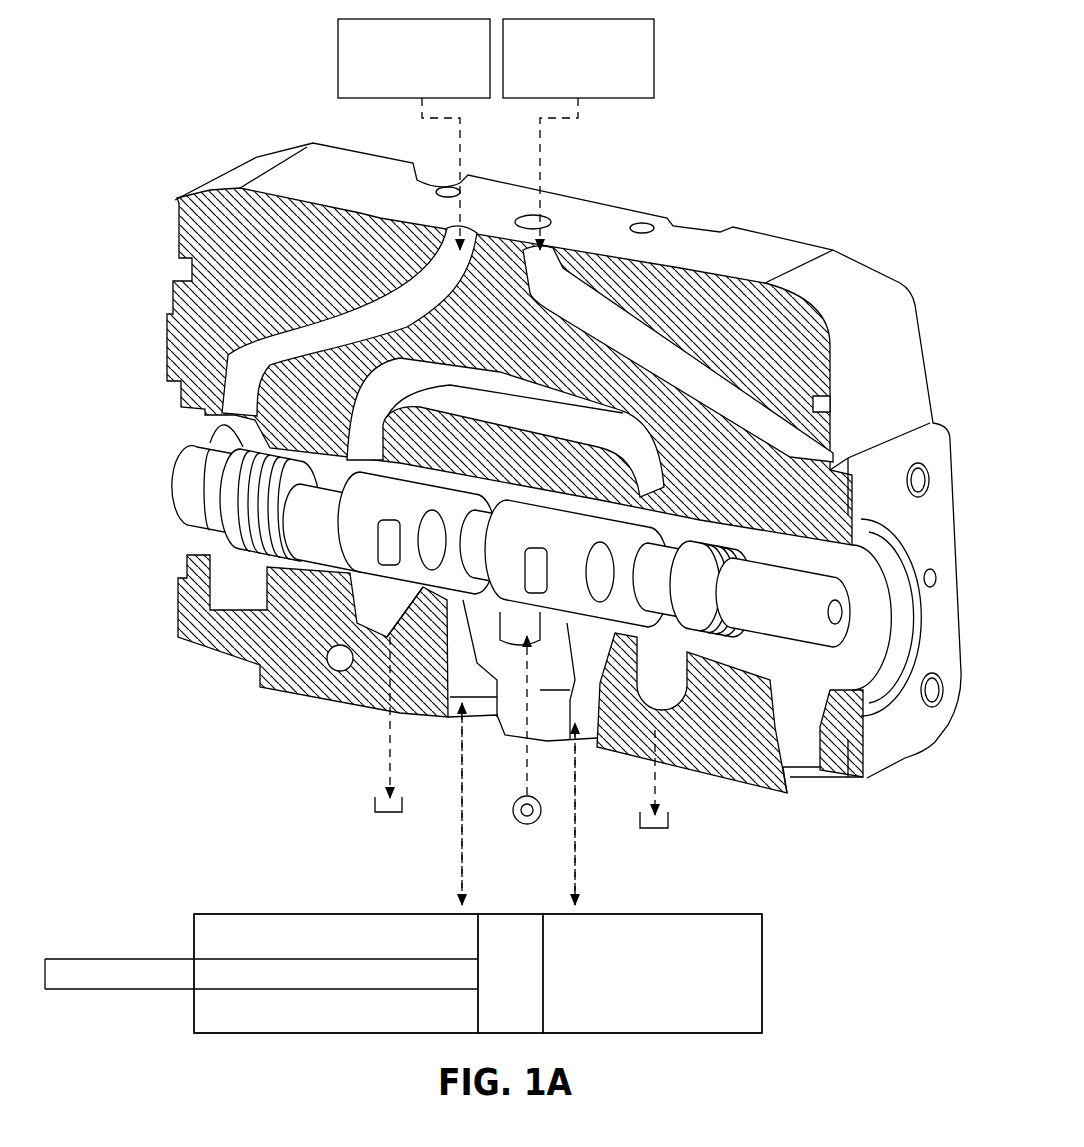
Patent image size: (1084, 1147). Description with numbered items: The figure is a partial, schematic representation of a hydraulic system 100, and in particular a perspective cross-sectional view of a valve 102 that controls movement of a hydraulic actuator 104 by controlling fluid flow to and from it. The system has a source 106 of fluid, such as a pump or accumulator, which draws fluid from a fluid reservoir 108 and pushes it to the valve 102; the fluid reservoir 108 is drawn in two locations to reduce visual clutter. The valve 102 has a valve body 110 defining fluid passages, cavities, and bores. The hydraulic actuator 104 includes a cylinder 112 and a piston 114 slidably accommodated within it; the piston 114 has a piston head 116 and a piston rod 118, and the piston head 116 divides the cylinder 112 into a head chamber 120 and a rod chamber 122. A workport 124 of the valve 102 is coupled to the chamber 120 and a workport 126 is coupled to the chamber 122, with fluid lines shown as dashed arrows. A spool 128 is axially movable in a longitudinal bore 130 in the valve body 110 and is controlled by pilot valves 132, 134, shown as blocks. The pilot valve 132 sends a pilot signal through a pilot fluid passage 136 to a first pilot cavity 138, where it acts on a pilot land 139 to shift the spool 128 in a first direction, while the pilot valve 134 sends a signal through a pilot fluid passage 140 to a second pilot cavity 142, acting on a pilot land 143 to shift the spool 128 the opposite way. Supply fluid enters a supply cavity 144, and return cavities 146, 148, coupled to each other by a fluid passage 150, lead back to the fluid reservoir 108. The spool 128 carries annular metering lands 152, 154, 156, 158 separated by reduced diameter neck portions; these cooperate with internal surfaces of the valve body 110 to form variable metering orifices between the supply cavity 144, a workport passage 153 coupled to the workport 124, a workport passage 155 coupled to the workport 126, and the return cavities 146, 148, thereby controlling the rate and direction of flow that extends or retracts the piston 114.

The hydraulic system 100 is at (185, 45).
The valve 102 is at (247, 173).
The hydraulic actuator 104 is at (200, 910).
The source of fluid 106 is at (520, 822).
The fluid reservoir 108 is at (375, 805).
The valve body 110 is at (790, 255).
The cylinder 112 is at (330, 912).
The piston 114 is at (105, 955).
The piston head 116 is at (518, 930).
The piston rod 118 is at (370, 958).
The chamber 120 is at (708, 950).
The chamber 122 is at (440, 935).
The workport 124 is at (590, 745).
The workport 126 is at (480, 720).
The spool 128 is at (177, 470).
The longitudinal bore 130 is at (333, 463).
The pilot valve 132 is at (578, 134).
The pilot valve 134 is at (414, 134).
The pilot fluid passage 136 is at (648, 380).
The first pilot cavity 138 is at (817, 702).
The pilot land 139 is at (725, 650).
The pilot fluid passage 140 is at (352, 325).
The second pilot cavity 142 is at (253, 608).
The pilot land 143 is at (283, 553).
The supply cavity 144 is at (517, 617).
The return cavity 146 is at (685, 695).
The return cavity 148 is at (375, 618).
The fluid passage 150 is at (505, 415).
The annular metering land 152 is at (590, 550).
The workport passage 153 is at (596, 673).
The annular metering land 154 is at (535, 530).
The workport passage 155 is at (450, 638).
The annular metering land 156 is at (440, 493).
The annular metering land 158 is at (397, 490).